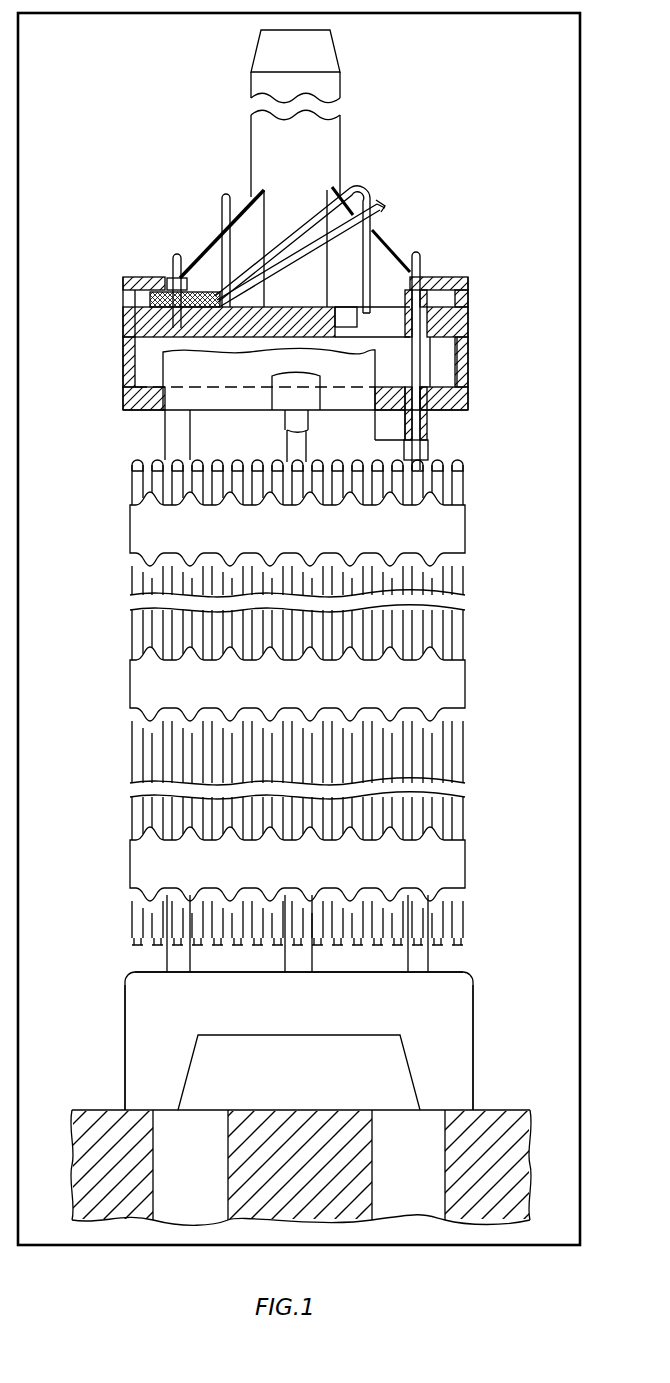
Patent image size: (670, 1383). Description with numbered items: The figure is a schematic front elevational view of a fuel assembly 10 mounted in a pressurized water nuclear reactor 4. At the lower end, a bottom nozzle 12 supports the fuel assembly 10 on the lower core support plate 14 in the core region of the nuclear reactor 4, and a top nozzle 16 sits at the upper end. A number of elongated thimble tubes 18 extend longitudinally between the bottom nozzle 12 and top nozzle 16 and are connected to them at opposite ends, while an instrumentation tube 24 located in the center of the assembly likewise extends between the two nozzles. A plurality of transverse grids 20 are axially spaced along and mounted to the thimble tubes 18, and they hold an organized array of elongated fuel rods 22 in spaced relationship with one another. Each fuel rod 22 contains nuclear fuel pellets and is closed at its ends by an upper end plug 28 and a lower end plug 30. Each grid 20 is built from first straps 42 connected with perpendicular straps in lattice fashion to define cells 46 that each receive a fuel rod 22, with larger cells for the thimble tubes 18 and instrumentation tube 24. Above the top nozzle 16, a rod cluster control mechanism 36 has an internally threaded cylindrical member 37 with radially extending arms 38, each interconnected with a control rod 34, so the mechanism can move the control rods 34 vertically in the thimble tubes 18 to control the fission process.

The nuclear reactor 4 is at (582, 612).
The fuel assembly 10 is at (315, 716).
The bottom nozzle 12 is at (333, 1002).
The lower core support plate 14 is at (513, 1108).
The top nozzle 16 is at (324, 356).
The thimble tubes 18 is at (427, 423).
The grids 20 is at (314, 541).
The fuel rods 22 is at (458, 766).
The instrumentation tube 24 is at (285, 449).
The upper end plug 28 is at (438, 456).
The lower end plug 30 is at (154, 948).
The control rods 34 is at (440, 378).
The rod cluster control mechanism 36 is at (345, 123).
The internally threaded cylindrical member 37 is at (340, 152).
The radially extending arms 38 is at (210, 243).
The first straps 42 is at (468, 316).
The cells 46 is at (262, 971).